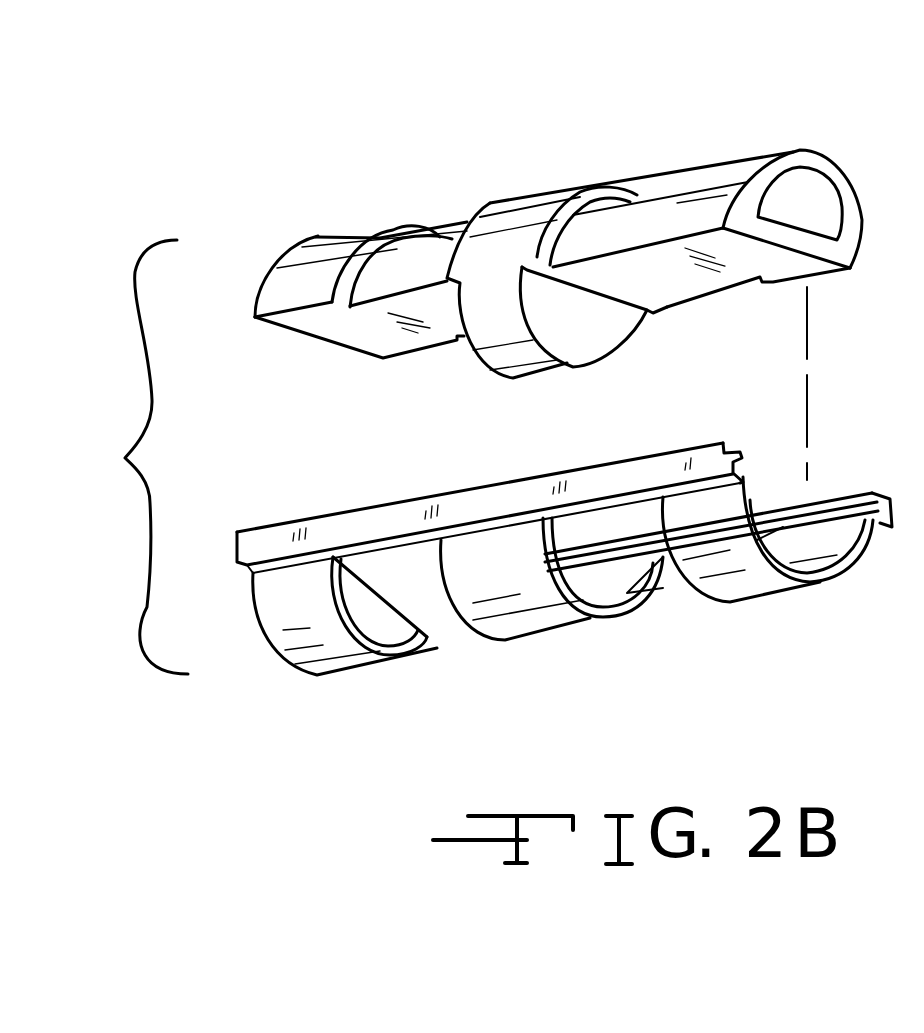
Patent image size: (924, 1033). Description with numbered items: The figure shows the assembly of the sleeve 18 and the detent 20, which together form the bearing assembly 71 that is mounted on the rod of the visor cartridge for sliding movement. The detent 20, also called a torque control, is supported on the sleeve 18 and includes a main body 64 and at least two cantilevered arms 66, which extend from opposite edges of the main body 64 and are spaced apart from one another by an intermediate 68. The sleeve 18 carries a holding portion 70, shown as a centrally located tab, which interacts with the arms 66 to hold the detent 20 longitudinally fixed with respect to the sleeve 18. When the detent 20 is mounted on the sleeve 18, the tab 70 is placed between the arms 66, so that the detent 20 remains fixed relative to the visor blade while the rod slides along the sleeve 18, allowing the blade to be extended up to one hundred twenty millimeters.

The sleeve 18 is at (558, 263).
The detent 20 is at (574, 575).
The main body 64 is at (267, 520).
The cantilevered arms 66 is at (455, 640).
The intermediate 68 is at (557, 640).
The holding portion 70 is at (512, 358).
The bearing assembly 71 is at (126, 457).